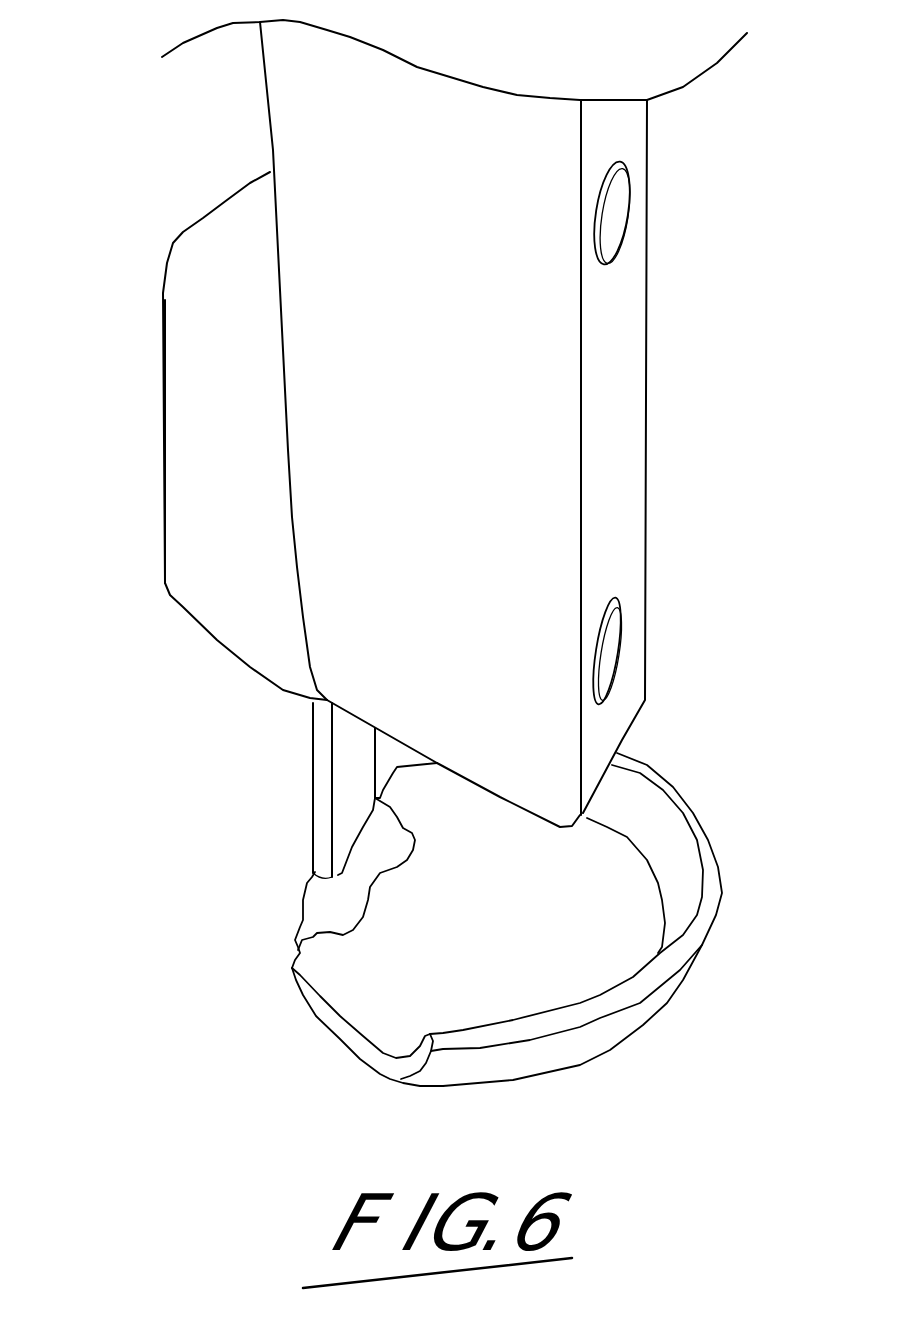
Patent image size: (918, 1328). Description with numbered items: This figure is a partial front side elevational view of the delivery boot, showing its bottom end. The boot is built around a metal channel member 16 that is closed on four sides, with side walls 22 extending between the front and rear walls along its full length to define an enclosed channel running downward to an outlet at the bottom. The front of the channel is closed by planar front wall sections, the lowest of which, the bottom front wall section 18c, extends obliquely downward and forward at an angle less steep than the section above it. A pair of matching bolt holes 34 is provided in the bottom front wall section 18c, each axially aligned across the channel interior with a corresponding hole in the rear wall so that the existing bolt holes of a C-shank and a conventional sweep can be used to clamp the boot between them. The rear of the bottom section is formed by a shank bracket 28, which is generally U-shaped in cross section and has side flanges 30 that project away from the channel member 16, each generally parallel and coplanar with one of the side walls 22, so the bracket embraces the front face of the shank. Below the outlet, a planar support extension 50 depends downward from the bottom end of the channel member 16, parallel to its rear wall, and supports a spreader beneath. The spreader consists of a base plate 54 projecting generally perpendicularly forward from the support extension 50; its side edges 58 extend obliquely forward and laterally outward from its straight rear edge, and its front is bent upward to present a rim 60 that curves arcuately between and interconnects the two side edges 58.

The channel member 16 is at (553, 463).
The bottom front wall section 18c is at (678, 456).
The side walls 22 is at (454, 360).
The shank bracket 28 is at (204, 426).
The side flanges 30 is at (159, 441).
The bolt holes 34 is at (666, 432).
The support extension 50 is at (286, 790).
The base plate 54 is at (590, 857).
The side edges 58 is at (335, 1027).
The rim 60 is at (610, 919).